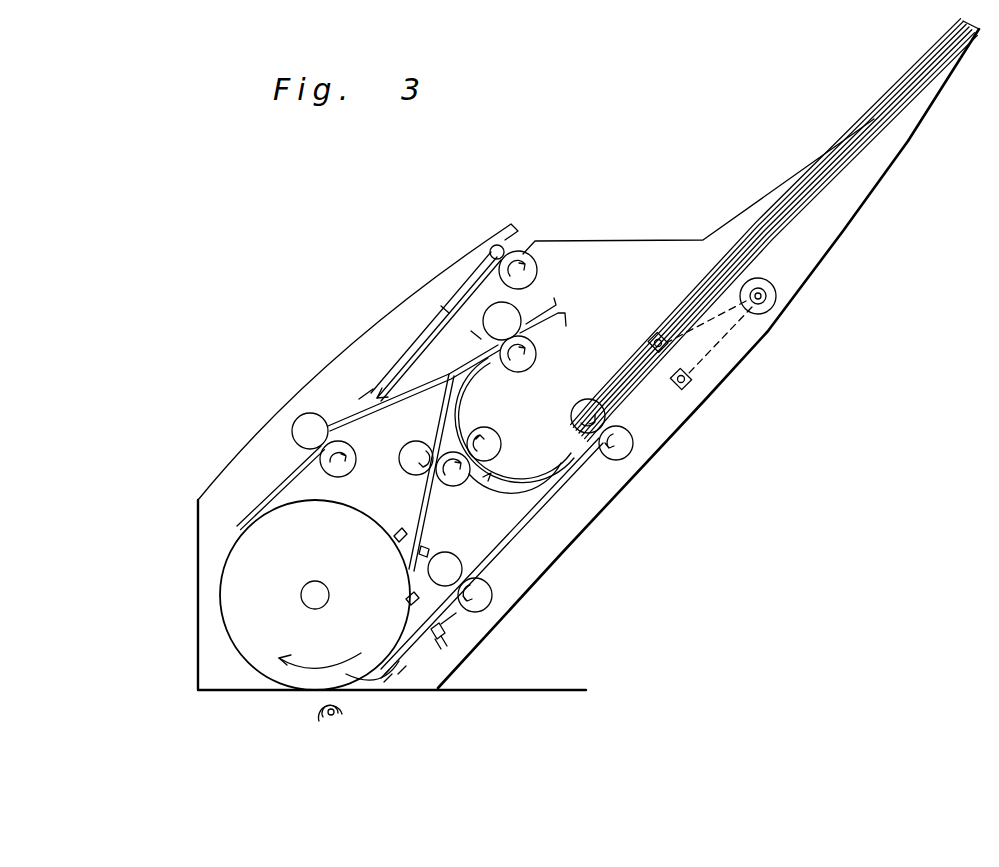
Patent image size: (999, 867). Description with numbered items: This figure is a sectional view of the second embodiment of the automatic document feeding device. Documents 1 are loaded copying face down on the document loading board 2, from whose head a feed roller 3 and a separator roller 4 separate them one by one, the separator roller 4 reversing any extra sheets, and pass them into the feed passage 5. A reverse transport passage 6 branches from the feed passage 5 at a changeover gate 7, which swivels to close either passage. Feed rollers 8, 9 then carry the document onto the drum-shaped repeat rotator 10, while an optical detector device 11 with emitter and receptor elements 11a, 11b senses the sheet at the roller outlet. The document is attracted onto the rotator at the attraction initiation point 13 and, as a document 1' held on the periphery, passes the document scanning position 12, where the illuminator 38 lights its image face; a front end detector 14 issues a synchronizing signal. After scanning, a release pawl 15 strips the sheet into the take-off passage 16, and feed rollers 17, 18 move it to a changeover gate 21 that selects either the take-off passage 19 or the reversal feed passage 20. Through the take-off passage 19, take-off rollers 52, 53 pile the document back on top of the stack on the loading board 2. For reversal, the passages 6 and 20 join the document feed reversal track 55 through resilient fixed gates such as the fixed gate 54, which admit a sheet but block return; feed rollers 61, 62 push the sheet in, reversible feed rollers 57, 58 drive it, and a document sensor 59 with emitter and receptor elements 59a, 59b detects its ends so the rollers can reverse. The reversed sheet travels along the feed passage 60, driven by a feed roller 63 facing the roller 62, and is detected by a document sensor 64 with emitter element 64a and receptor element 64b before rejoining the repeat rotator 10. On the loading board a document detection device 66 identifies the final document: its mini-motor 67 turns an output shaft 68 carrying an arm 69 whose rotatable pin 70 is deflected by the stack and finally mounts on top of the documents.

The document 1 is at (776, 230).
The document 1' is at (782, 238).
The document loading board 2 is at (867, 175).
The feed roller 3 is at (633, 438).
The separator roller 4 is at (590, 410).
The feed passage 5 is at (552, 499).
The reverse transport passage 6 is at (552, 513).
The changeover gate 7 is at (542, 477).
The feed roller 8 is at (492, 593).
The feed roller 9 is at (462, 567).
The repeat rotator 10 is at (345, 673).
The optical detector device 11 is at (475, 643).
The emitter element 11a is at (438, 640).
The receptor element 11b is at (463, 634).
The document scanning position 12 is at (310, 690).
The attraction initiation point 13 is at (403, 677).
The front end detector 14 is at (390, 683).
The release pawl 15 is at (199, 499).
The take-off passage 16 is at (275, 509).
The feed roller 17 is at (291, 430).
The feed roller 18 is at (288, 471).
The take-off passage 19 is at (392, 357).
The reversal feed passage 20 is at (413, 328).
The changeover gate 21 is at (369, 399).
The illuminator 38 is at (330, 725).
The take-off roller 52 is at (522, 253).
The take-off roller 53 is at (495, 244).
The fixed gate 54 is at (455, 425).
The document feed reversal track 55 is at (450, 384).
The reversible feed roller 57 is at (535, 355).
The reversible feed roller 58 is at (504, 310).
The document sensor 59 is at (512, 368).
The emitter element 59a is at (475, 335).
The receptor element 59b is at (443, 300).
The feed passage 60 is at (420, 513).
The feed roller 61 is at (490, 443).
The feed roller 62 is at (552, 545).
The feed roller 63 is at (327, 425).
The document sensor 64 is at (432, 543).
The emitter element 64a is at (398, 533).
The receptor element 64b is at (410, 568).
The document detection device 66 is at (782, 268).
The mini-motor 67 is at (775, 293).
The output shaft 68 is at (668, 342).
The arm 69 is at (738, 345).
The rotatable pin 70 is at (690, 380).